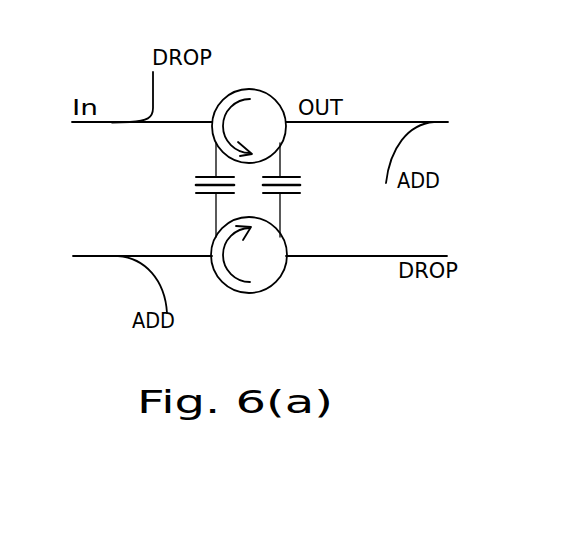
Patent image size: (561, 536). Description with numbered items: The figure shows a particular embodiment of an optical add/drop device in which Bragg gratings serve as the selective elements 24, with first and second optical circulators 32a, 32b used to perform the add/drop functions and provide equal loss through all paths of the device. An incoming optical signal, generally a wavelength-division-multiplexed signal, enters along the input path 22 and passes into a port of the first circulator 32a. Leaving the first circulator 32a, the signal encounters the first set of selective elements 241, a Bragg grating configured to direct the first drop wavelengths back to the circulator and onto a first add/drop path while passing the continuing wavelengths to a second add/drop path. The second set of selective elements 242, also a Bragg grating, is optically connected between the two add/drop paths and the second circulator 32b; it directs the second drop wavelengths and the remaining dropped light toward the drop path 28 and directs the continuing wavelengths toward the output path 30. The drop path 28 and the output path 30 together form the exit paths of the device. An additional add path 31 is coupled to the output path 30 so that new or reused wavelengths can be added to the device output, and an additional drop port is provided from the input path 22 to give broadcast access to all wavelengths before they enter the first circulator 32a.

The input path 22 is at (105, 125).
The selective elements 24 is at (245, 190).
The first set of selective elements 241 is at (196, 190).
The second set of selective elements 242 is at (300, 190).
The drop path 28 is at (143, 92).
The output path 30 is at (393, 120).
The add path 31 is at (393, 150).
The first optical circulator 32a is at (252, 89).
The second optical circulator 32b is at (257, 293).